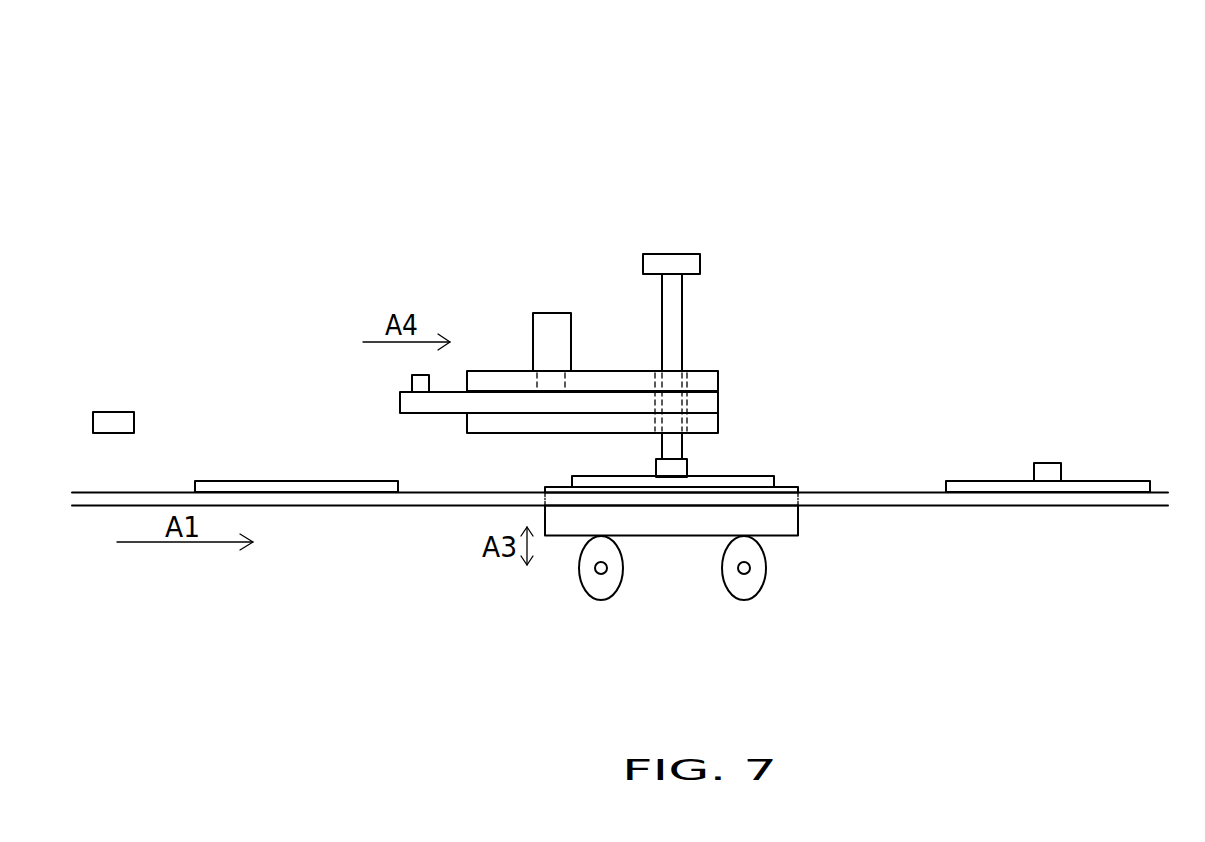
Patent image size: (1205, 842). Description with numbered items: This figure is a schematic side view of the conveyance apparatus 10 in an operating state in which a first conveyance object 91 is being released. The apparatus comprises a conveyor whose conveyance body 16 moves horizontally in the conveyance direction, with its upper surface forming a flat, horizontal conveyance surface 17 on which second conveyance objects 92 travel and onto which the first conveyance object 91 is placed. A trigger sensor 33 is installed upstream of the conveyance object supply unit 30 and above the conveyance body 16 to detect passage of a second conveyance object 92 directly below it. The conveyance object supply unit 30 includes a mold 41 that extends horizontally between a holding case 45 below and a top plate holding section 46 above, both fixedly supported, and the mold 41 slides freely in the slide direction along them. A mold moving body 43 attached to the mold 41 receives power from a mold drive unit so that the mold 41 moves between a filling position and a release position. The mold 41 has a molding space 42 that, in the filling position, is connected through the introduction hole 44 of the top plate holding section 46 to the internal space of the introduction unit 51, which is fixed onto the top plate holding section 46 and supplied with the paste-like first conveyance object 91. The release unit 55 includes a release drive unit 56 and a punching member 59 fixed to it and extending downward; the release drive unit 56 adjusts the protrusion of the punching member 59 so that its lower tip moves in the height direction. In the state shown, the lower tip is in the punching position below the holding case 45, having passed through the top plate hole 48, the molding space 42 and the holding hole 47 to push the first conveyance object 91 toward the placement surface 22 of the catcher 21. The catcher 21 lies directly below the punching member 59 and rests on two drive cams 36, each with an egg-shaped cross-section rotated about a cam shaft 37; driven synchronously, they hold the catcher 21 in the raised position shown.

The conveyance apparatus 10 is at (1028, 98).
The conveyance body 16 is at (306, 500).
The conveyance surface 17 is at (879, 492).
The catcher 21 is at (790, 522).
The placement surface 22 is at (555, 485).
The conveyance object supply unit 30 is at (587, 257).
The trigger sensor 33 is at (112, 417).
The drive cam 36 is at (587, 577).
The cam shaft 37 is at (598, 575).
The mold 41 is at (400, 405).
The molding space 42 is at (655, 400).
The mold moving body 43 is at (418, 377).
The introduction hole 44 is at (537, 380).
The holding case 45 is at (718, 420).
The top plate holding section 46 is at (717, 380).
The holding hole 47 is at (690, 422).
The top plate hole 48 is at (688, 383).
The introduction unit 51 is at (557, 335).
The release unit 55 is at (715, 237).
The release drive unit 56 is at (693, 263).
The punching member 59 is at (677, 303).
The first conveyance object 91 is at (675, 468).
The second conveyance object 92 is at (222, 487).